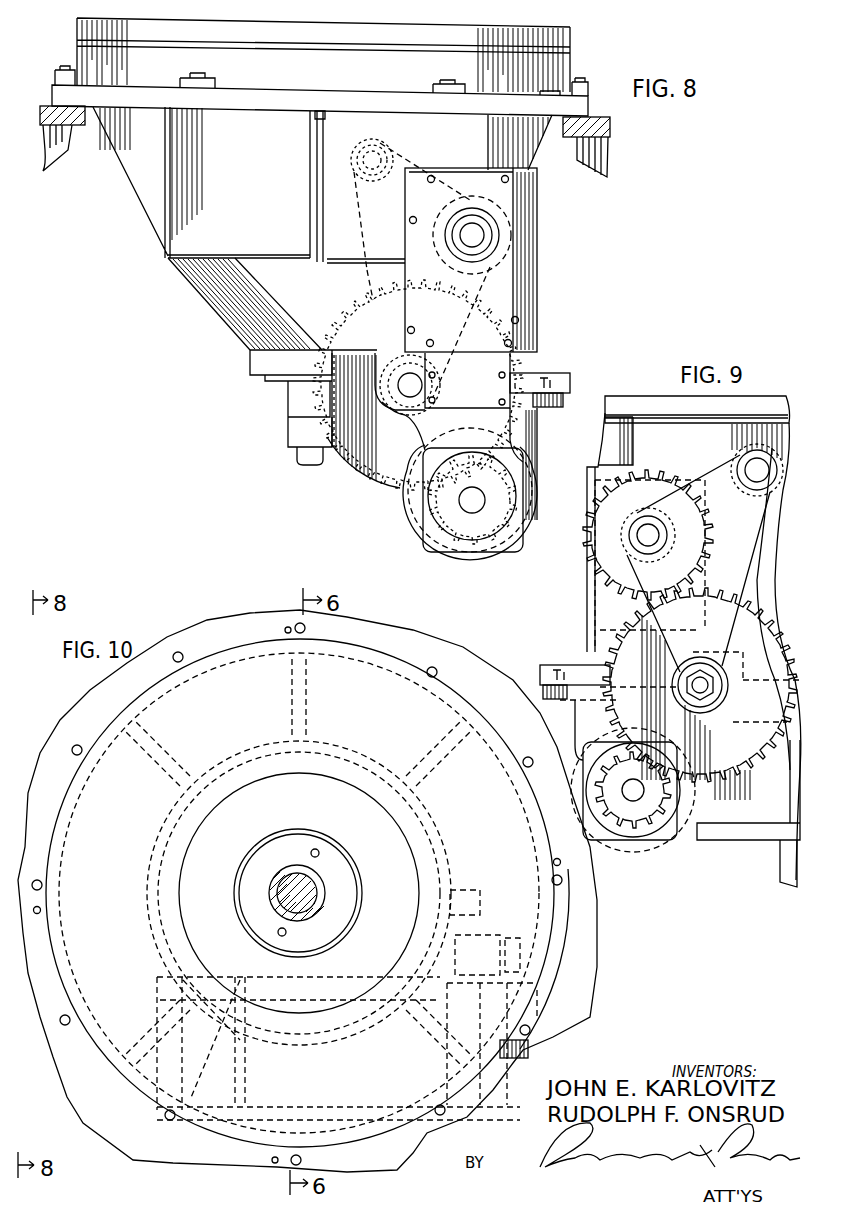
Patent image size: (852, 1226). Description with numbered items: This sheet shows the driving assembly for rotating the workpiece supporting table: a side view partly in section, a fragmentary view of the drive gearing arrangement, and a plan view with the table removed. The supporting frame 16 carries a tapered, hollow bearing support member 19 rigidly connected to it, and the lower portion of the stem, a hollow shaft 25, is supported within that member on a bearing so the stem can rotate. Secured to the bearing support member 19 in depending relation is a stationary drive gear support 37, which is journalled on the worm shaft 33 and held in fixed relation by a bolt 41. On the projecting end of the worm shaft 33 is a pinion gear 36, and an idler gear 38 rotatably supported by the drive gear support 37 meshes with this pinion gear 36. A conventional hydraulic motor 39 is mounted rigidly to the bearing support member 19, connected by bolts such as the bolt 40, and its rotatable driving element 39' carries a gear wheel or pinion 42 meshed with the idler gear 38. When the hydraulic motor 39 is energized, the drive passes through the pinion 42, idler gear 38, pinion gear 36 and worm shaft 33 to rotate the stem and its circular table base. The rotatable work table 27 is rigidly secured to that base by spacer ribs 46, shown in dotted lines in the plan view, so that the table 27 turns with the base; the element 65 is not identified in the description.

In FIG. 8, the supporting frame 16 is at (64, 138).
In FIG. 8, the bearing support member 19 is at (589, 104).
In FIG. 9, the bearing support member 19 is at (772, 433).
In FIG. 10, the hollow shaft 25 is at (314, 878).
In FIG. 10, the rotatable work table 27 is at (450, 648).
In FIG. 9, the worm shaft 33 is at (662, 542).
In FIG. 8, the pinion gear 36 is at (542, 229).
In FIG. 9, the pinion gear 36 is at (617, 560).
In FIG. 8, the stationary drive gear support 37 is at (366, 218).
In FIG. 9, the stationary drive gear support 37 is at (750, 558).
In FIG. 8, the idler gear 38 is at (515, 336).
In FIG. 9, the idler gear 38 is at (782, 660).
In FIG. 8, the hydraulic motor 39 is at (485, 484).
In FIG. 9, the hydraulic motor 39 is at (633, 807).
In FIG. 8, the rotatable driving element 39' is at (479, 535).
In FIG. 9, the rotatable driving element 39' is at (651, 825).
In FIG. 8, the bolt 40 is at (552, 377).
In FIG. 9, the bolt 40 is at (557, 665).
In FIG. 8, the bolt 41 is at (368, 143).
In FIG. 9, the bolt 41 is at (778, 470).
In FIG. 8, the gear wheel or pinion 42 is at (538, 524).
In FIG. 9, the gear wheel or pinion 42 is at (612, 823).
In FIG. 10, the spacer ribs 46 is at (310, 701).
In FIG. 10, the bushing 65 is at (308, 906).